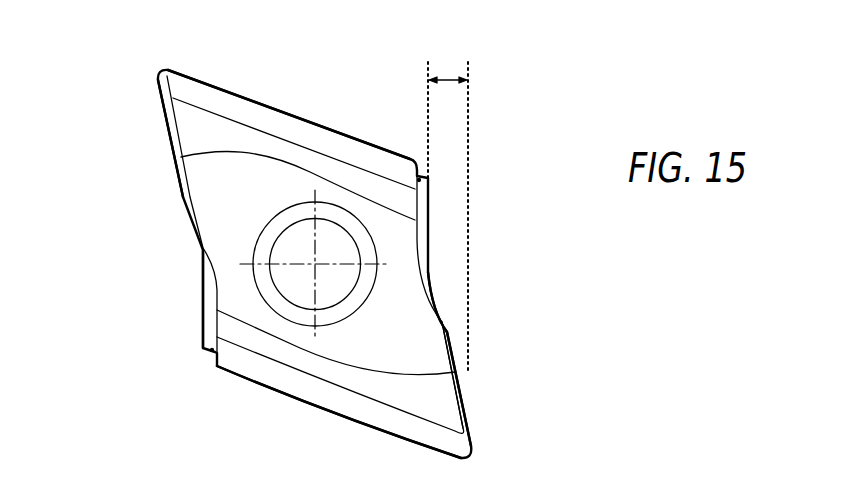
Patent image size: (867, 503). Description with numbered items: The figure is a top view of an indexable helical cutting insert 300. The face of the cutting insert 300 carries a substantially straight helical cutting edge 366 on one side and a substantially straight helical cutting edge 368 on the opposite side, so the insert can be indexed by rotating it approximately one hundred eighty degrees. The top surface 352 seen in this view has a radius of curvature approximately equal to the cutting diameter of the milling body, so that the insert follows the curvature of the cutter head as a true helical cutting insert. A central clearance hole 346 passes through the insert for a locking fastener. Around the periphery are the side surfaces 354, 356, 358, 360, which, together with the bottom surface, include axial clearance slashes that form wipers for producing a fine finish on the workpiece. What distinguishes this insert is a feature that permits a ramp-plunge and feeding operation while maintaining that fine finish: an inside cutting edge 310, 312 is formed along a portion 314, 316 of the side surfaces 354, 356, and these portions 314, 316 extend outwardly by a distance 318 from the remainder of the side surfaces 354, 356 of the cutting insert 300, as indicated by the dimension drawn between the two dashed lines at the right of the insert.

The helical cutting insert 300 is at (523, 85).
The inside cutting edge 310 is at (473, 412).
The inside cutting edge 312 is at (157, 92).
The portion of side surface 314 is at (487, 392).
The portion of side surface 316 is at (124, 120).
The distance 318 is at (448, 79).
The central hole 346 is at (339, 229).
The top surface 352 is at (398, 279).
The side surface 354 is at (175, 272).
The side surface 356 is at (482, 337).
The side surface 358 is at (324, 417).
The side surface 360 is at (223, 72).
The helical cutting edge 366 is at (277, 105).
The helical cutting edge 368 is at (402, 441).